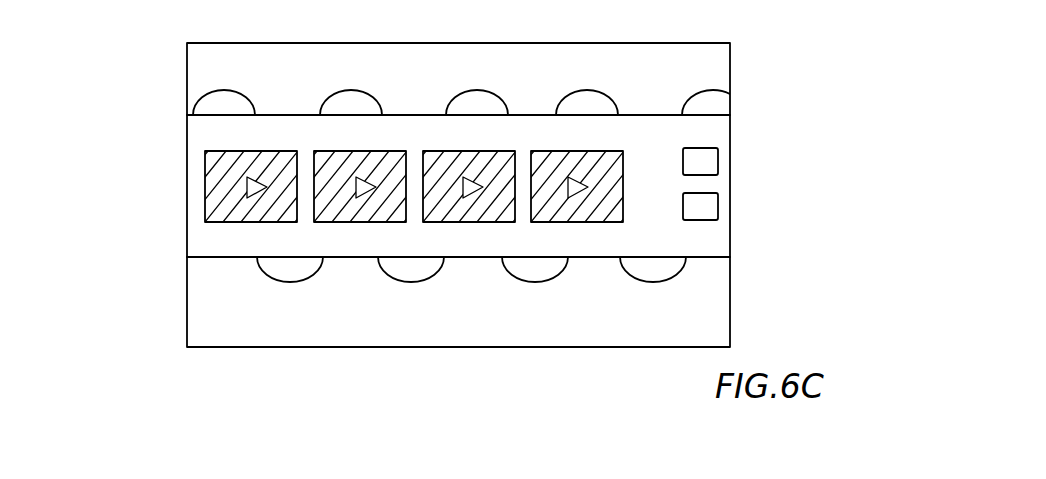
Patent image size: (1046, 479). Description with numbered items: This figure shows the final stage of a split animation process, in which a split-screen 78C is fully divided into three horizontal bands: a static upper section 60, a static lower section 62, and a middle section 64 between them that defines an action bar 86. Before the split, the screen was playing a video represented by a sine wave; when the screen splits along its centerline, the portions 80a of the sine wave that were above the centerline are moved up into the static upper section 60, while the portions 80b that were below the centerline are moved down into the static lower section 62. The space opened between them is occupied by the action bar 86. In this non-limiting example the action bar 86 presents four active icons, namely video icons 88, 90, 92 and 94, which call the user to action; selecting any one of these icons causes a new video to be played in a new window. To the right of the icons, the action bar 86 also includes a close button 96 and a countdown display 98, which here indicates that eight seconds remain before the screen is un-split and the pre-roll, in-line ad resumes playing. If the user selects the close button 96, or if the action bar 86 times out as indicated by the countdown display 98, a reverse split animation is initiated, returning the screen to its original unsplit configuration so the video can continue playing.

The split-screen 78C is at (100, 57).
The static upper section 60 is at (183, 48).
The static lower section 62 is at (183, 260).
The middle section 64 is at (183, 125).
The portions of the sine wave above the centerline 80a is at (352, 90).
The portions of the sine wave below the centerline 80b is at (405, 290).
The action bar 86 is at (673, 195).
The video icon 88 is at (232, 151).
The video icon 90 is at (340, 151).
The video icon 92 is at (449, 151).
The video icon 94 is at (556, 151).
The close button 96 is at (718, 160).
The countdown display 98 is at (718, 205).